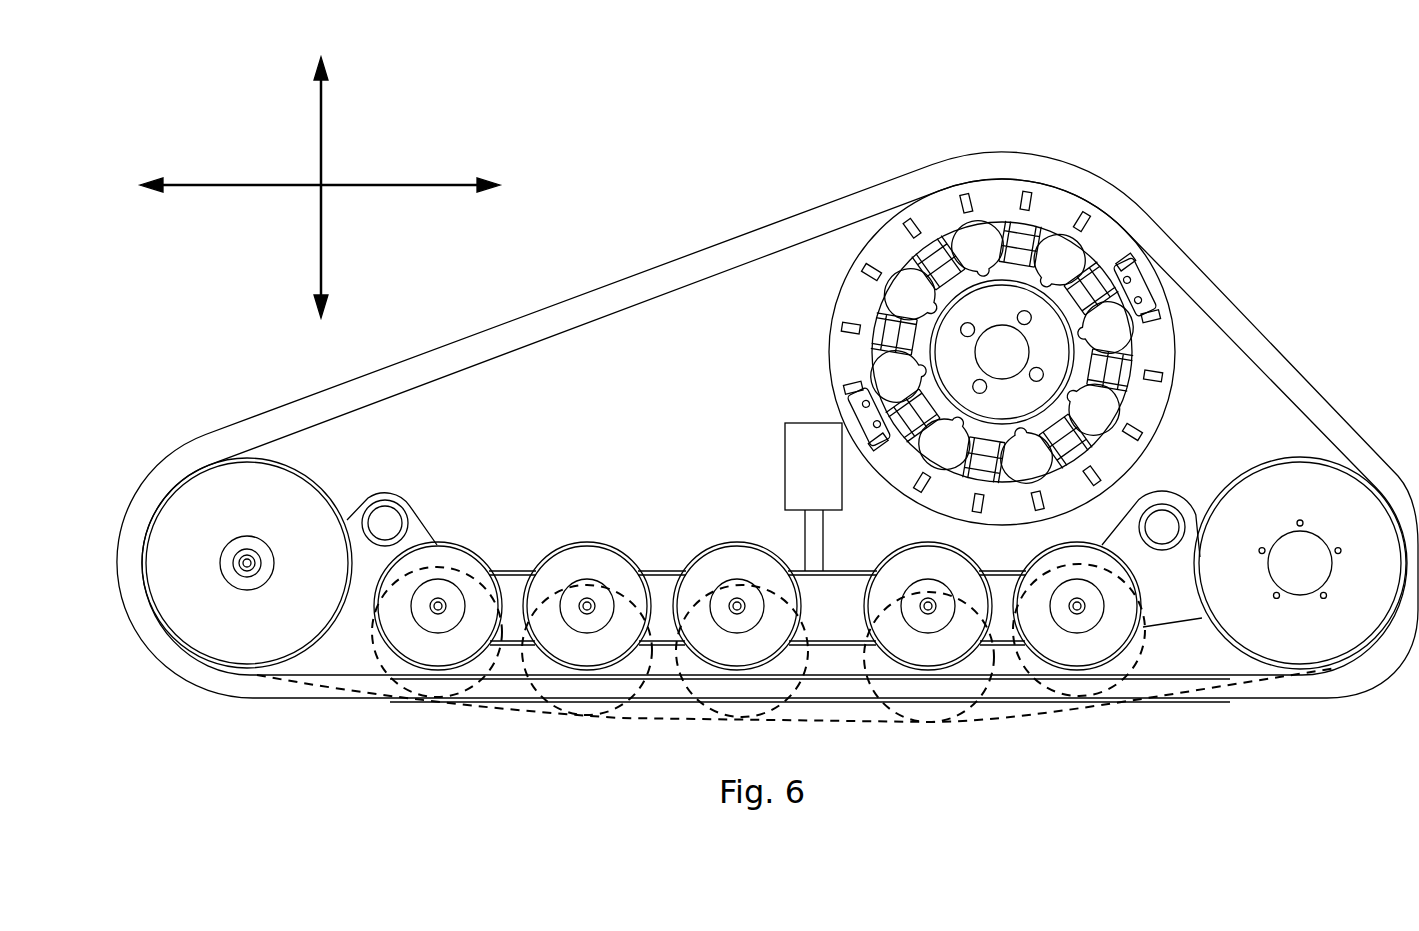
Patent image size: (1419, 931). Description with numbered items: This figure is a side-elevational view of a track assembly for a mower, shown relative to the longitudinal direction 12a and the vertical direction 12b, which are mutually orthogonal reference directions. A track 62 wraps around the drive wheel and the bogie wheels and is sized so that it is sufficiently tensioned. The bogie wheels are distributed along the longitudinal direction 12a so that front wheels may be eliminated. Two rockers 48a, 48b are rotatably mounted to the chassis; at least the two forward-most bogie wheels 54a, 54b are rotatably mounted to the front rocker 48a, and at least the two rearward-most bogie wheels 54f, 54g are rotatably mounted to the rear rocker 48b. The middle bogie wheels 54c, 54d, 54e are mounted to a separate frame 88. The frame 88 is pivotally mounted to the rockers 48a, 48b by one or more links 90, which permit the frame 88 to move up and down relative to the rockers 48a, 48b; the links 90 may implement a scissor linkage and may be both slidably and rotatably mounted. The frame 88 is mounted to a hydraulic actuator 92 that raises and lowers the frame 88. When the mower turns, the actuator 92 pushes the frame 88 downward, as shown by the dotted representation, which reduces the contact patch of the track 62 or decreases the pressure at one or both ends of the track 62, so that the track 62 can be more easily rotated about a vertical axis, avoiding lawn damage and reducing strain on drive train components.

The longitudinal direction 12a is at (383, 185).
The vertical direction 12b is at (320, 135).
The track 62 is at (268, 432).
The bogie wheel 54a is at (247, 563).
The bogie wheel 54b is at (452, 553).
The bogie wheel 54c is at (577, 568).
The bogie wheel 54d is at (752, 568).
The bogie wheel 54e is at (928, 572).
The bogie wheel 54f is at (1068, 558).
The bogie wheel 54g is at (1300, 563).
The rocker 48a is at (363, 598).
The rocker 48b is at (1173, 595).
The frame 88 is at (757, 619).
The link 90 is at (657, 595).
The hydraulic actuator 92 is at (813, 497).